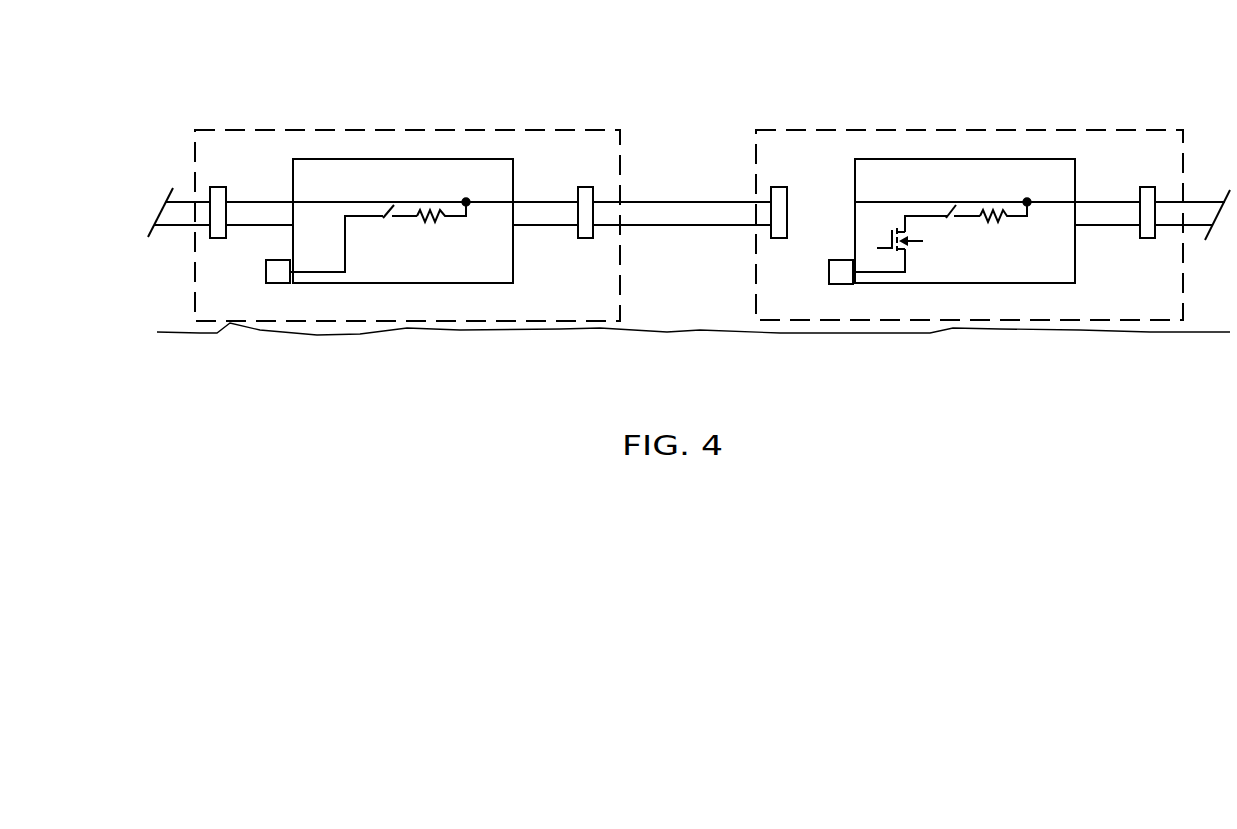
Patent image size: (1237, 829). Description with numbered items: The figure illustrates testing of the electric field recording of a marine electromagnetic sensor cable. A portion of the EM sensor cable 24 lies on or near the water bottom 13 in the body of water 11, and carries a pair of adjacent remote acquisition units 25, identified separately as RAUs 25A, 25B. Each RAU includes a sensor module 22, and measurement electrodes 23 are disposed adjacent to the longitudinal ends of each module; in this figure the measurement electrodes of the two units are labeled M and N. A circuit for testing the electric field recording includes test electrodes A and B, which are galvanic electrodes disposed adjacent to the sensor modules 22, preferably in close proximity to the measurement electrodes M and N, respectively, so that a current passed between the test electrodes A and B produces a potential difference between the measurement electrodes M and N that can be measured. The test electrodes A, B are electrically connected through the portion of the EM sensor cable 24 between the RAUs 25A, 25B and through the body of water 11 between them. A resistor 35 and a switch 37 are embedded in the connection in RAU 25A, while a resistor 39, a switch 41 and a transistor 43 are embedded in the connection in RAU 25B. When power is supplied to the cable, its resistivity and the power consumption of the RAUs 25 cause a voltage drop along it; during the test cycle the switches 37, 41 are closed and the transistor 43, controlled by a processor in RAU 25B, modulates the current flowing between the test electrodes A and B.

The body of water 11 is at (701, 290).
The water bottom 13 is at (1210, 328).
The sensor module 22 is at (406, 158).
The measurement electrodes 23 is at (217, 238).
The EM sensor cable 24 is at (688, 200).
The remote acquisition units 25 is at (544, 128).
The first remote acquisition unit 25A is at (202, 128).
The second remote acquisition unit 25B is at (766, 127).
The resistor 35 is at (433, 222).
The switch 37 is at (388, 218).
The resistor 39 is at (995, 222).
The switch 41 is at (949, 218).
The transistor 43 is at (911, 250).
The test electrode A is at (280, 283).
The test electrode B is at (838, 284).
The measurement electrode M is at (218, 186).
The measurement electrode N is at (783, 186).